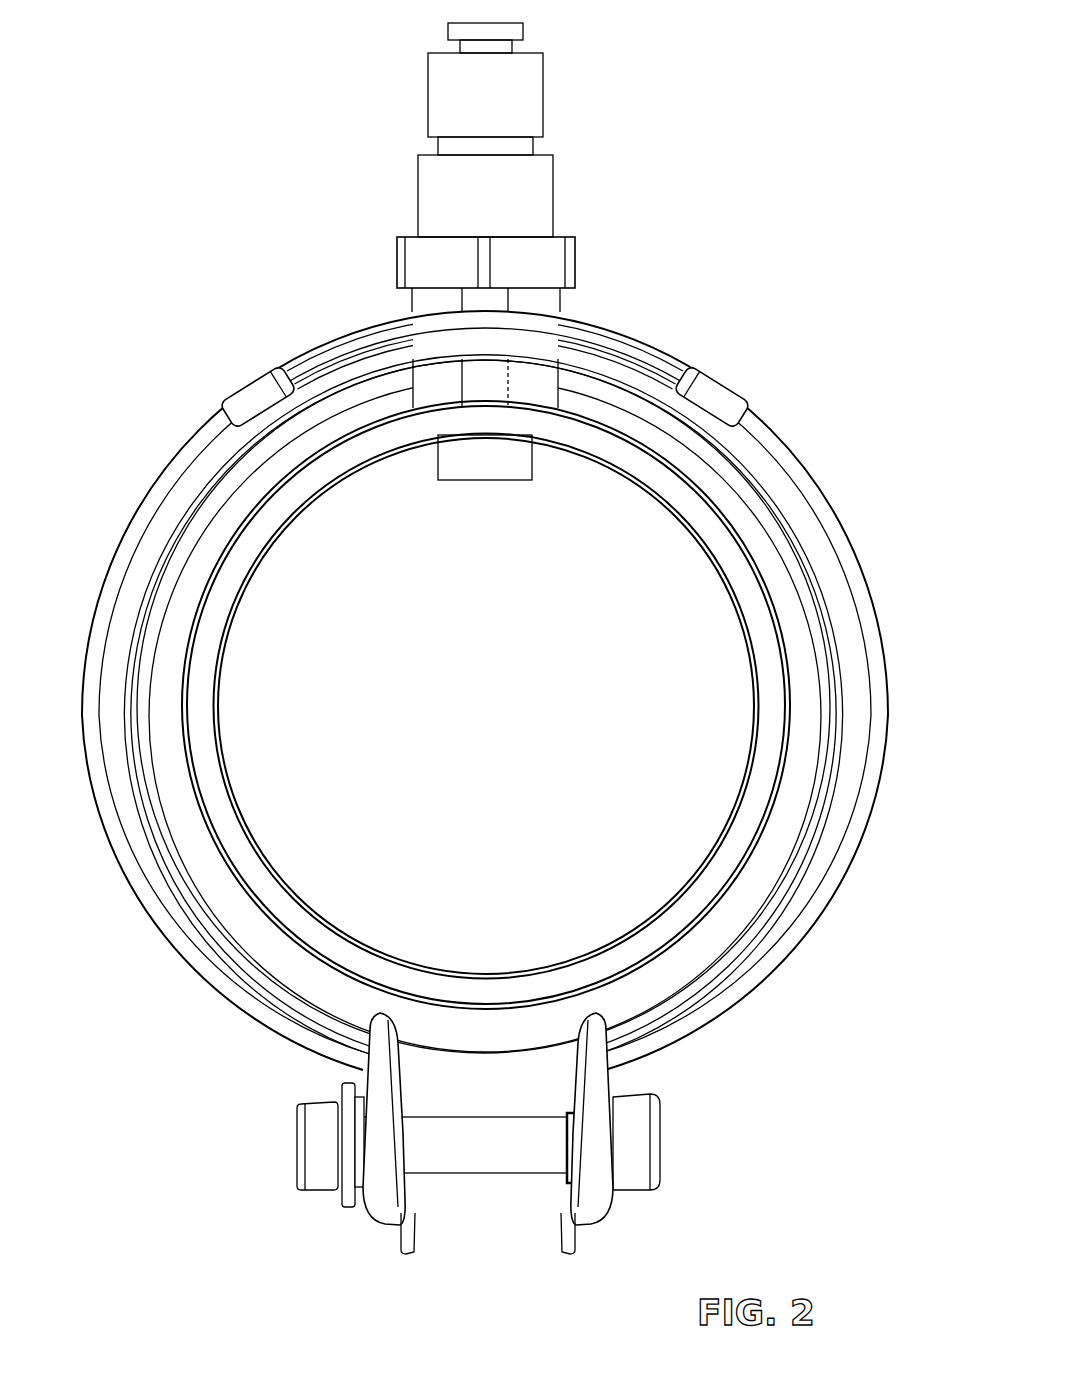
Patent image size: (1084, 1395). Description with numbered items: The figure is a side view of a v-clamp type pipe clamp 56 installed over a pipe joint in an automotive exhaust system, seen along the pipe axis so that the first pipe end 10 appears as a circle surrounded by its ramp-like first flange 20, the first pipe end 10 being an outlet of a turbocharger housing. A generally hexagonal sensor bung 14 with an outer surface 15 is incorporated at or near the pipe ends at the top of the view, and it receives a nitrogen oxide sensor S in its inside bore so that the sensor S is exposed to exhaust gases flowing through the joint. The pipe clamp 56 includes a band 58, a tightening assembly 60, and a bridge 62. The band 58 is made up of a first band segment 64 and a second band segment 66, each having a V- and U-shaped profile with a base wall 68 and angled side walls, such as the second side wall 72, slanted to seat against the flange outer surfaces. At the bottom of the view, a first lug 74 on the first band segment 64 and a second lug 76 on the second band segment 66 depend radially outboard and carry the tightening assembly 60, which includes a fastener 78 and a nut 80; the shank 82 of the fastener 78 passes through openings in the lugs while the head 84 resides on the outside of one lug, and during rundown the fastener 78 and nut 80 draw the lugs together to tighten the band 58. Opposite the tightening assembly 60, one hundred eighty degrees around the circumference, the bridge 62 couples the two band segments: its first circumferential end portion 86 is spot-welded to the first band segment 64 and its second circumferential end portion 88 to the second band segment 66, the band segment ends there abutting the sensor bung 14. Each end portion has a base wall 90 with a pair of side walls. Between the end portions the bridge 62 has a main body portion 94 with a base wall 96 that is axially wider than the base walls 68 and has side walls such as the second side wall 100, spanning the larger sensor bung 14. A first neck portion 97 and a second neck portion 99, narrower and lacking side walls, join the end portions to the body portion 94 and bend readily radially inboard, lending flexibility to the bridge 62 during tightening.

The sensor S is at (523, 188).
The first pipe end 10 is at (207, 748).
The sensor bung 14 is at (492, 378).
The outer surface 15 is at (547, 298).
The first flange 20 is at (452, 1030).
The pipe clamp 56 is at (497, 730).
The band 58 is at (497, 609).
The tightening assembly 60 is at (457, 1114).
The bridge 62 is at (348, 318).
The first band segment 64 is at (168, 893).
The second band segment 66 is at (817, 873).
The base wall 68 is at (197, 440).
The second side wall 72 is at (168, 507).
The first lug 74 is at (367, 1188).
The second lug 76 is at (630, 1193).
The fastener 78 is at (507, 1133).
The nut 80 is at (323, 1128).
The shank 82 is at (370, 1114).
The head 84 is at (637, 1150).
The first circumferential end portion 86 is at (262, 372).
The second circumferential end portion 88 is at (717, 397).
The base wall 90 is at (740, 395).
The main body portion 94 is at (582, 333).
The base wall 96 is at (408, 303).
The first neck portion 97 is at (299, 350).
The second neck portion 99 is at (676, 358).
The second side wall 100 is at (432, 350).